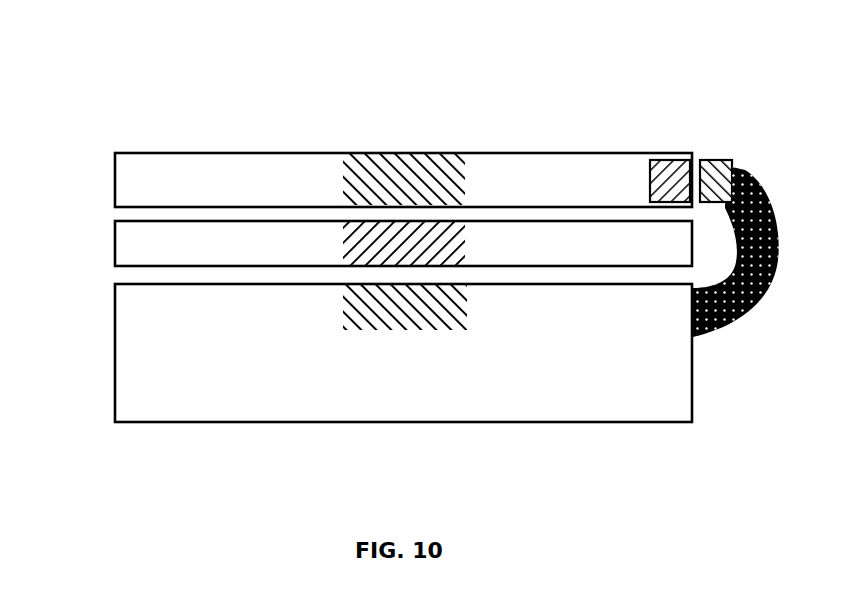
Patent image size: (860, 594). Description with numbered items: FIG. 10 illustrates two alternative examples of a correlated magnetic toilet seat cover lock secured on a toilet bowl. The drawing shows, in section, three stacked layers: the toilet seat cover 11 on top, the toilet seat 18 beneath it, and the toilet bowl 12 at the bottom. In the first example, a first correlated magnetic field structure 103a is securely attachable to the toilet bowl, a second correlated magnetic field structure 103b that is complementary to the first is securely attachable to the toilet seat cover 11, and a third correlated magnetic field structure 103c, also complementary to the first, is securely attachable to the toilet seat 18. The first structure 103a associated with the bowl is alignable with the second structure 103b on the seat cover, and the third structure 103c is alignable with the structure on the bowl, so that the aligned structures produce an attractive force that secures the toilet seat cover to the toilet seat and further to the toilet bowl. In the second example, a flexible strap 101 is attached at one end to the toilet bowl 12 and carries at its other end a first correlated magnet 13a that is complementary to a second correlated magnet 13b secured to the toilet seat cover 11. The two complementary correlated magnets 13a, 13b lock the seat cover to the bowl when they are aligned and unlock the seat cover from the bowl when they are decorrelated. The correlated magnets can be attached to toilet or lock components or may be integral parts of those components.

The toilet seat cover 11 is at (403, 180).
The toilet seat 18 is at (403, 243).
The toilet bowl 12 is at (403, 353).
The first correlated magnetic field structure 103a is at (327, 311).
The second correlated magnetic field structure 103b is at (328, 177).
The third correlated magnetic field structure 103c is at (327, 242).
The first correlated magnet 13a is at (714, 143).
The second correlated magnet 13b is at (669, 145).
The flexible strap 101 is at (761, 186).